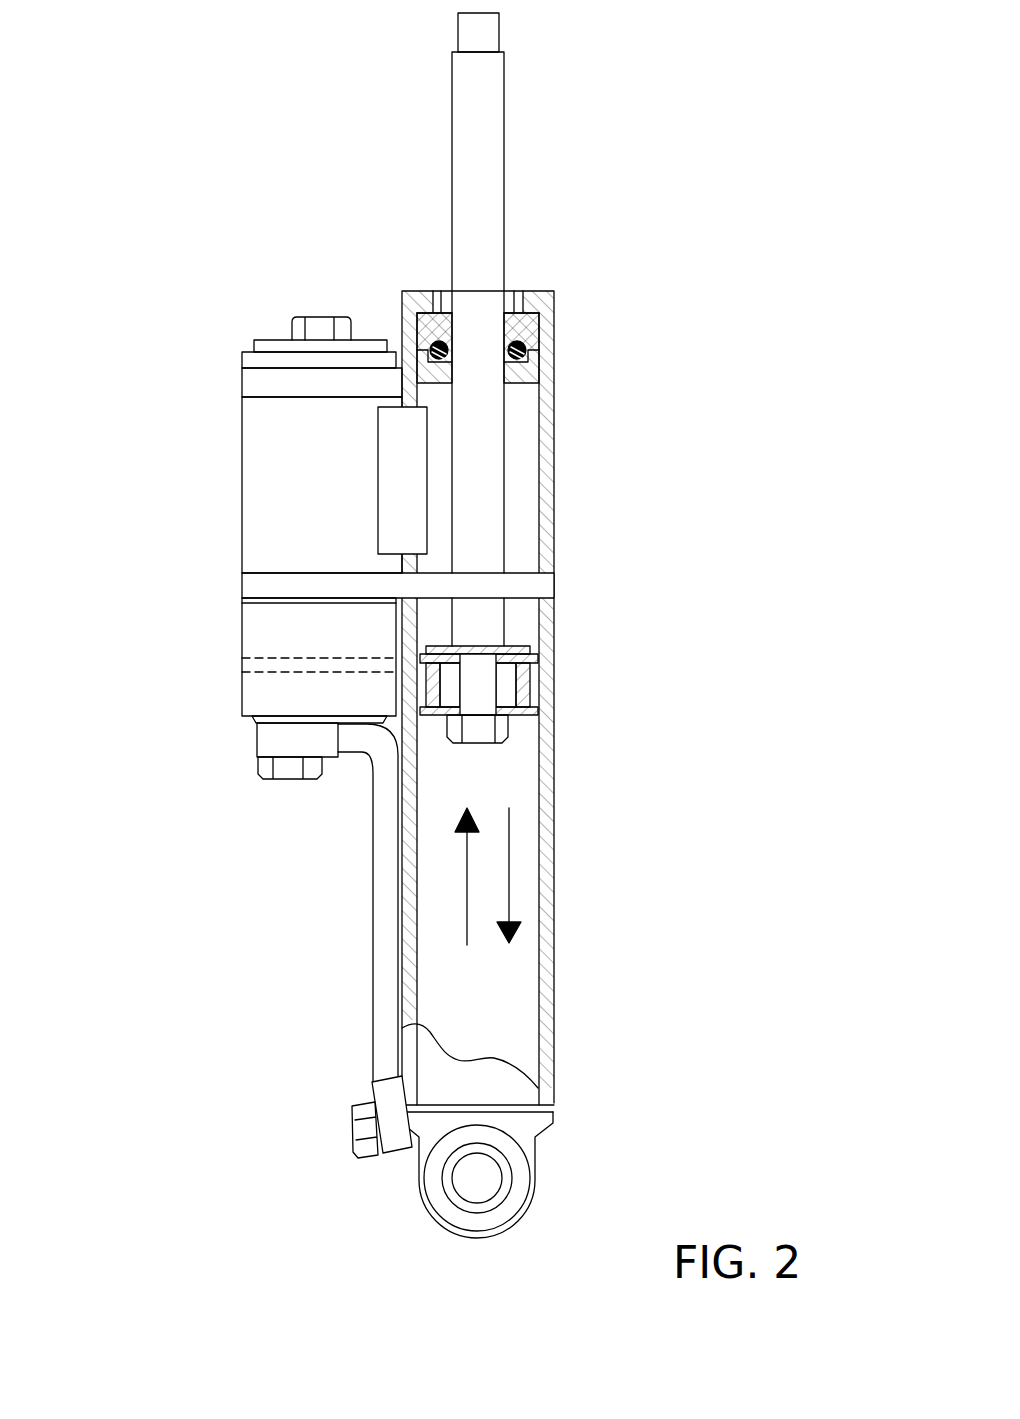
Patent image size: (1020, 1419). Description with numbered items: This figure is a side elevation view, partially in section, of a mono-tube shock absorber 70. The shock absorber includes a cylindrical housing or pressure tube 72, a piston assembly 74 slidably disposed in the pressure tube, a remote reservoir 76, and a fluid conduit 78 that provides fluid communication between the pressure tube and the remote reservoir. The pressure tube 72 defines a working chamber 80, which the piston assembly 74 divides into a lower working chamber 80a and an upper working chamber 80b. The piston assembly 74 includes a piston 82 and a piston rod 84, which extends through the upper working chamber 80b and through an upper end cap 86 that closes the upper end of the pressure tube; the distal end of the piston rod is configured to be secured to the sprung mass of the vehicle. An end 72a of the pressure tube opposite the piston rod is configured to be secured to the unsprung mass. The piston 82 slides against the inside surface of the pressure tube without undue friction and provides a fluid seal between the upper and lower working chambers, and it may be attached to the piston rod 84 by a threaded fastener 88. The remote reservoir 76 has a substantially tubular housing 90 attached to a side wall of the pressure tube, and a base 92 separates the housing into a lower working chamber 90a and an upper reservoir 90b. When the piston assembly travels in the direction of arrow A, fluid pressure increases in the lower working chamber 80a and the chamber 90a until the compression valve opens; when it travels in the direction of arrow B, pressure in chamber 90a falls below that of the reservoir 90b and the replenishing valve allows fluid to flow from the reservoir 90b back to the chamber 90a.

The mono-tube shock absorber 70 is at (126, 100).
The pressure tube 72 is at (547, 472).
The end of the pressure tube 72a is at (520, 1188).
The piston assembly 74 is at (533, 616).
The remote reservoir 76 is at (229, 416).
The fluid conduit 78 is at (386, 920).
The working chamber 80 is at (534, 532).
The lower working chamber 80a is at (510, 1020).
The upper working chamber 80b is at (520, 418).
The piston 82 is at (522, 680).
The piston rod 84 is at (490, 178).
The upper end cap 86 is at (530, 325).
The threaded fastener 88 is at (510, 732).
The tubular housing 90 is at (229, 484).
The lower working chamber of housing 90a is at (262, 700).
The reservoir 90b is at (262, 638).
The base 92 is at (262, 665).
The arrow A is at (509, 863).
The arrow B is at (467, 890).